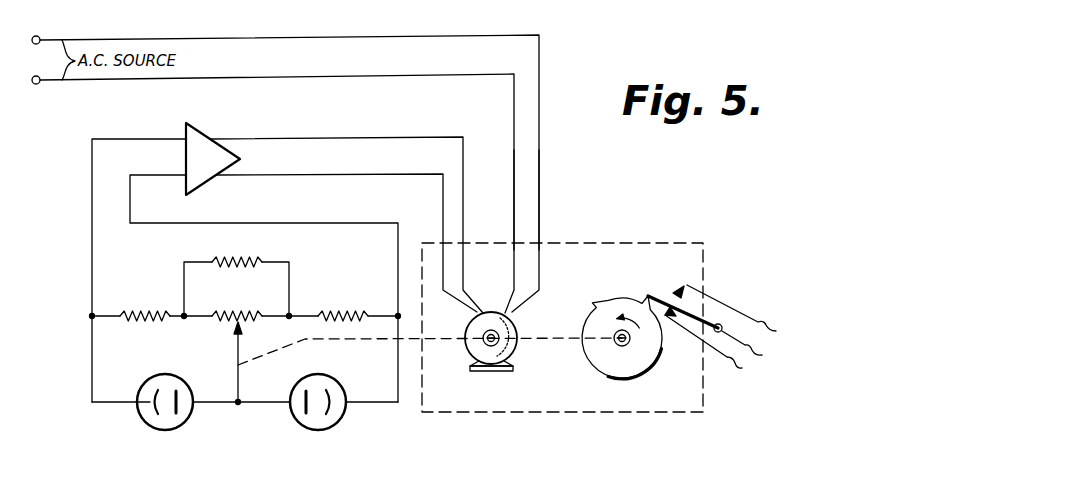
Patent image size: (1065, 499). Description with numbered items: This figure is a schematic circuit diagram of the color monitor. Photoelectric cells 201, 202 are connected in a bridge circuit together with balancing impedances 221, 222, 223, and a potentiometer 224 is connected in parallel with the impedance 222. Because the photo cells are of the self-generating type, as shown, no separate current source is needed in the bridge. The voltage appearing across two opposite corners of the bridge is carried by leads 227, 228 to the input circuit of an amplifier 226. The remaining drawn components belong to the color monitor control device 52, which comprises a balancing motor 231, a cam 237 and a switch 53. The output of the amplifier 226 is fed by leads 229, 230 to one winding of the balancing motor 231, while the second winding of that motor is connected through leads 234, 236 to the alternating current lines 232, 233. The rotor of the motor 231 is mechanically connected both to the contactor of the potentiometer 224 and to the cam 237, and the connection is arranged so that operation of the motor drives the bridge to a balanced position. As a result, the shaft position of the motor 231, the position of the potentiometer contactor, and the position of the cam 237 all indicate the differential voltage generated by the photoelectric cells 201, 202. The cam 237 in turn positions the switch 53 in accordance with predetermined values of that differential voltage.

The photoelectric cell 201 is at (172, 430).
The photoelectric cell 202 is at (310, 430).
The balancing impedance 221 is at (140, 298).
The balancing impedance 222 is at (253, 260).
The balancing impedance 223 is at (338, 292).
The potentiometer 224 is at (222, 322).
The amplifier 226 is at (186, 123).
The lead 227 is at (118, 134).
The lead 228 is at (150, 172).
The lead 229 is at (378, 137).
The lead 230 is at (372, 174).
The balancing motor 231 is at (482, 371).
The alternating current line 232 is at (232, 35).
The alternating current line 233 is at (236, 78).
The lead 234 is at (514, 107).
The lead 236 is at (541, 177).
The cam 237 is at (602, 372).
The color monitor control device 52 is at (643, 413).
The switch 53 is at (680, 296).